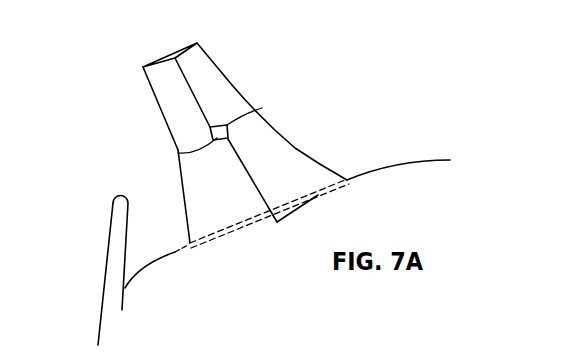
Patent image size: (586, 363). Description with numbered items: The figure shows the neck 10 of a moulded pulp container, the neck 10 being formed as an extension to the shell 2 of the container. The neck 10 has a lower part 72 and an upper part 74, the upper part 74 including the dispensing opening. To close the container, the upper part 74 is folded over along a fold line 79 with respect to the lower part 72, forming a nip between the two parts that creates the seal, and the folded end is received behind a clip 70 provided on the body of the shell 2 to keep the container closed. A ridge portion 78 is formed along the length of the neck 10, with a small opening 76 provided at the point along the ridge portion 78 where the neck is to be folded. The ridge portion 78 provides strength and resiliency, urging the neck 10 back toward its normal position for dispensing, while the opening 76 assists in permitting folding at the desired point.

The shell 2 is at (242, 291).
The neck 10 is at (258, 138).
The clip 70 is at (122, 232).
The lower part 72 is at (292, 159).
The upper part 74 is at (223, 72).
The small opening 76 is at (190, 166).
The ridge portion 78 is at (258, 193).
The fold line 79 is at (250, 118).